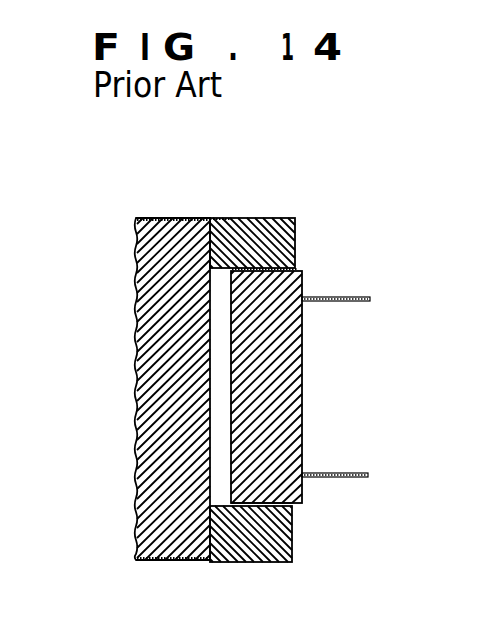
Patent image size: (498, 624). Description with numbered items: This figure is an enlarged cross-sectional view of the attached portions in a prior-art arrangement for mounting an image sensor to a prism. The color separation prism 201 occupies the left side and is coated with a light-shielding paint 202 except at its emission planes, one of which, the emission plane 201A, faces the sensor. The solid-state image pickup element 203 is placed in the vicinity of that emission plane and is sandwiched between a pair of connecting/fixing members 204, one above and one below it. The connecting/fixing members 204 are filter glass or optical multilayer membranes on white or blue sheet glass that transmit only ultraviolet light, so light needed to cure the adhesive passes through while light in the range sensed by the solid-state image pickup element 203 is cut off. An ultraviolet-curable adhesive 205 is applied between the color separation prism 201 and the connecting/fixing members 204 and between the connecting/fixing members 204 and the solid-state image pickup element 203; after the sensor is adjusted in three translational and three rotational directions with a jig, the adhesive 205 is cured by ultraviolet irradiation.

The color separation prism 201 is at (126, 334).
The surface of substrate 201A is at (223, 218).
The light-shielding paint 202 is at (172, 218).
The solid-state image pickup element 203 is at (303, 353).
The connecting/fixing members 204 is at (283, 218).
The ultraviolet-curable adhesive 205 is at (210, 317).